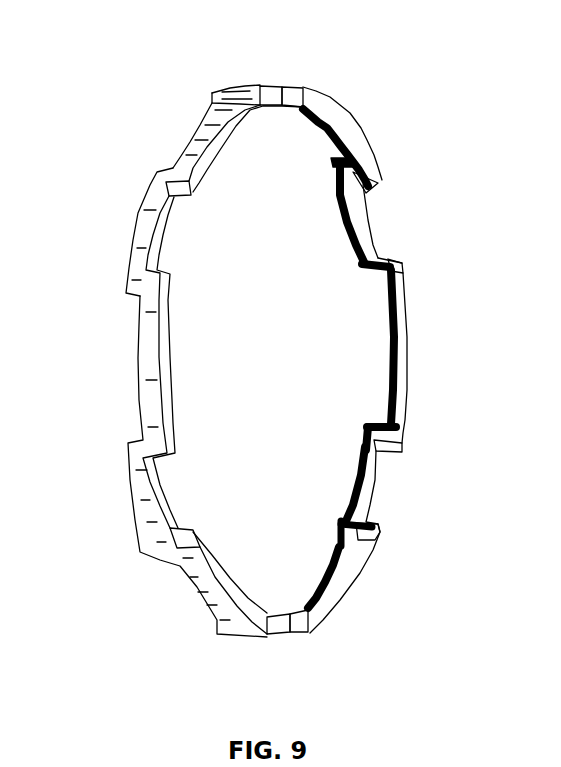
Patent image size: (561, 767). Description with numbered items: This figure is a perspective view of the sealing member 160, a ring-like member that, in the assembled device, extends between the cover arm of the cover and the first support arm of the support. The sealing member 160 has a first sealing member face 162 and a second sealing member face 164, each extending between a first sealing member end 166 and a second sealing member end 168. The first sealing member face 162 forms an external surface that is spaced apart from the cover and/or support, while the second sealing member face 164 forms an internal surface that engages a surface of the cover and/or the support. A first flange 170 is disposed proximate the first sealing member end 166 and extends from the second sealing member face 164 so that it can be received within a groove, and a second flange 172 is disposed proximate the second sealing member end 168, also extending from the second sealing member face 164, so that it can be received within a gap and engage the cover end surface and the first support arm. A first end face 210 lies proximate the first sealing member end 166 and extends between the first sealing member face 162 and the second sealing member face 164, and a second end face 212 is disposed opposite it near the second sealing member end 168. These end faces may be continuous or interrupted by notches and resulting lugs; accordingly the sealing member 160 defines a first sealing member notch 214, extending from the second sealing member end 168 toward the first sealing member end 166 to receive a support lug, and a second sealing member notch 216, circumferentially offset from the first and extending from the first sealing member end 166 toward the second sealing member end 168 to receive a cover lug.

The sealing member 160 is at (381, 79).
The first sealing member face 162 is at (186, 132).
The second sealing member face 164 is at (366, 262).
The first sealing member end 166 is at (130, 264).
The second sealing member end 168 is at (207, 150).
The first flange 170 is at (338, 170).
The second flange 172 is at (378, 185).
The first end face 210 is at (212, 100).
The second end face 212 is at (236, 118).
The first sealing member notch 214 is at (173, 212).
The second sealing member notch 216 is at (156, 162).